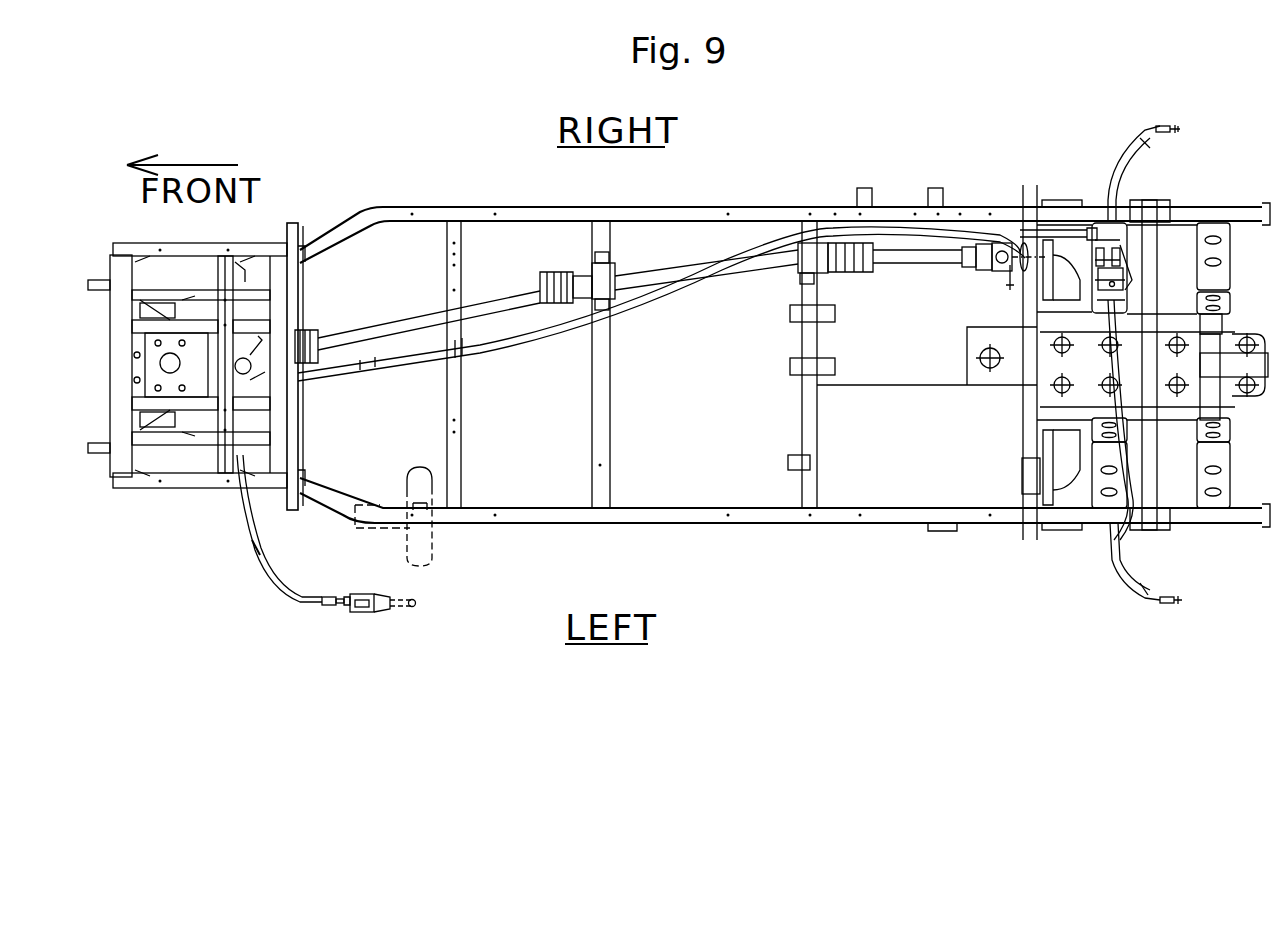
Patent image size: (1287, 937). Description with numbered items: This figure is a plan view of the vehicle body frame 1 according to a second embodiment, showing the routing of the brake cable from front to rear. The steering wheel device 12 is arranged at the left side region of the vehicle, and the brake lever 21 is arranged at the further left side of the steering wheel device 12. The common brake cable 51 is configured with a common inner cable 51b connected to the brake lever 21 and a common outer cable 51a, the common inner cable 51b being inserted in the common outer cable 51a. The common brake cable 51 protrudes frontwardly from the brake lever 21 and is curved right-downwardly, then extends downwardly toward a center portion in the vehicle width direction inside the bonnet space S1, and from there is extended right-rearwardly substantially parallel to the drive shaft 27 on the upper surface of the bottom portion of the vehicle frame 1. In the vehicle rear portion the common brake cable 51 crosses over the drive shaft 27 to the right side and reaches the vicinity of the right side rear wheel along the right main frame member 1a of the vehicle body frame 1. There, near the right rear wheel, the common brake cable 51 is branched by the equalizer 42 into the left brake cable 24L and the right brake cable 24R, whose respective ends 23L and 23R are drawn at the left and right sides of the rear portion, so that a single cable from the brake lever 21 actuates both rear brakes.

The vehicle body frame 1 is at (478, 205).
The right main frame member 1a is at (743, 220).
The bonnet space S1 is at (168, 460).
The drive shaft 27 is at (408, 318).
The common brake cable 51 is at (522, 330).
The common outer cable 51a is at (252, 540).
The common inner cable 51b is at (362, 620).
The brake lever 21 is at (410, 612).
The steering wheel device 12 is at (432, 540).
The equalizer 42 is at (1120, 260).
The right brake cable 24R is at (1128, 158).
The left brake cable 24L is at (1118, 555).
The right cable end 23R is at (1168, 120).
The left cable end 23L is at (1168, 607).